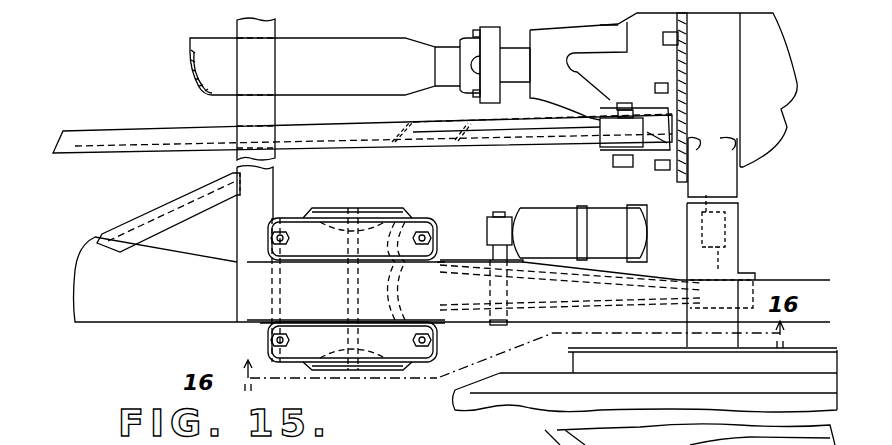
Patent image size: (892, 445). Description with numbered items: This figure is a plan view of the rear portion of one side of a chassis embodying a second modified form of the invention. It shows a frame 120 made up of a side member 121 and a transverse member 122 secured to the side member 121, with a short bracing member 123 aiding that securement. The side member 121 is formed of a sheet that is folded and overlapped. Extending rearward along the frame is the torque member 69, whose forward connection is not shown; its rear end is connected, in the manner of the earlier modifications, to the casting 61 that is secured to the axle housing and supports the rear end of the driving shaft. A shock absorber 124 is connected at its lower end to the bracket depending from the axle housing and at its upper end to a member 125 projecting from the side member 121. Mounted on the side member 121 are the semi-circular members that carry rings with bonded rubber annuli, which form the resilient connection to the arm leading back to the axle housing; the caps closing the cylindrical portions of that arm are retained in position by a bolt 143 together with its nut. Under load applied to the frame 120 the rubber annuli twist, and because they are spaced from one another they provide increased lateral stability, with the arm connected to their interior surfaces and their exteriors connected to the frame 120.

The casting 61 is at (546, 96).
The torque member 69 is at (412, 142).
The frame 120 is at (96, 227).
The side member 121 is at (160, 308).
The transverse member 122 is at (270, 197).
The bracing member 123 is at (176, 222).
The shock absorber 124 is at (603, 213).
The member 125 is at (490, 245).
The bolt 143 is at (353, 292).